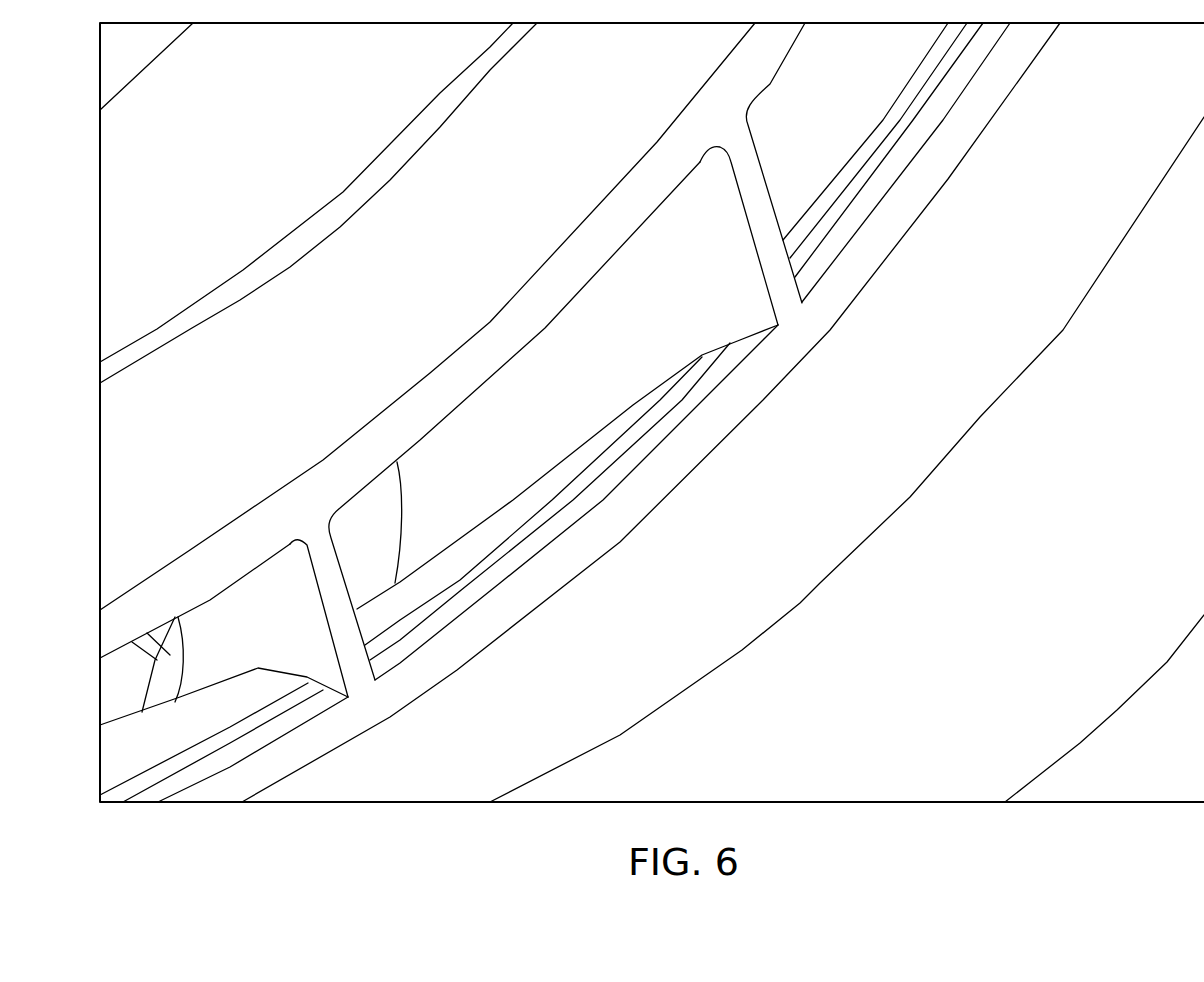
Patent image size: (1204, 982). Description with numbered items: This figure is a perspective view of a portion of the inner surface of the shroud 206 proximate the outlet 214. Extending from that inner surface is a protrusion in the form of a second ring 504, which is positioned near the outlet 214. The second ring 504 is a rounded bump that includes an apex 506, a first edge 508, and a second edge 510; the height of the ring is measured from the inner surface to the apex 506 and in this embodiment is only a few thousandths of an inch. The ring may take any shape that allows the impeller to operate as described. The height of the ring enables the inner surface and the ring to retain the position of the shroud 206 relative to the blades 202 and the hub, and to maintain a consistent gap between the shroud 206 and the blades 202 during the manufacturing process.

The blades 202 is at (713, 292).
The shroud 206 is at (678, 457).
The outlet 214 is at (462, 587).
The second ring 504 is at (820, 235).
The second edge 510 is at (855, 183).
The first edge 508 is at (900, 147).
The apex 506 is at (938, 85).